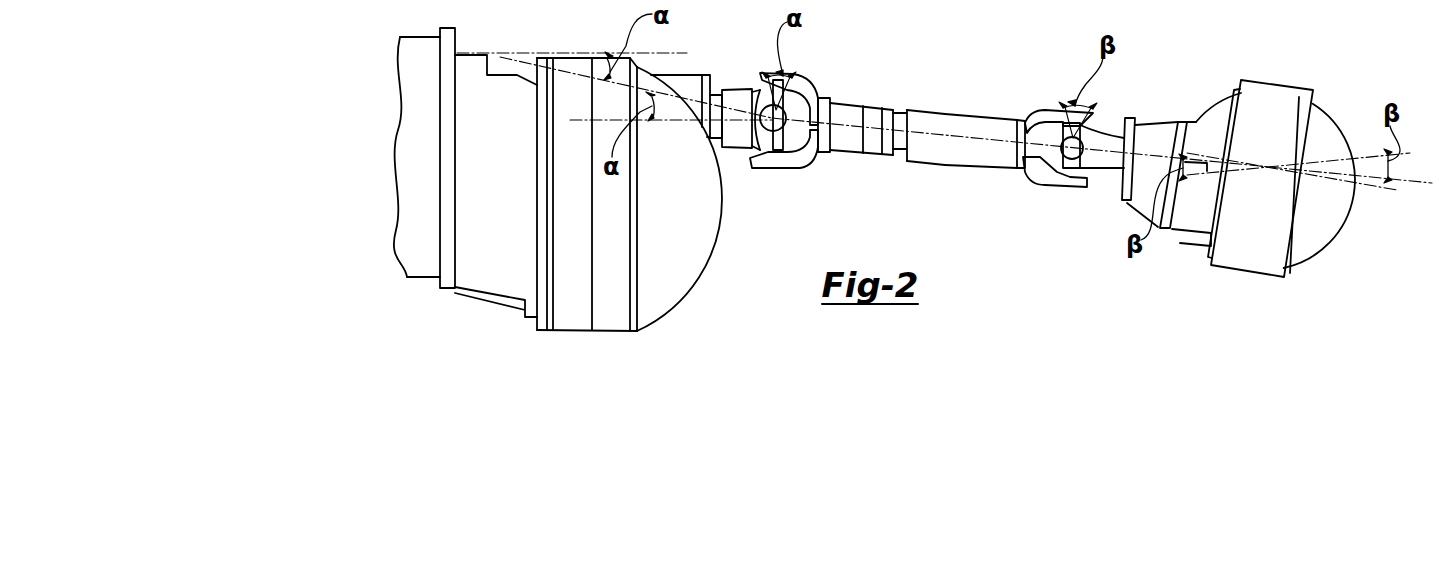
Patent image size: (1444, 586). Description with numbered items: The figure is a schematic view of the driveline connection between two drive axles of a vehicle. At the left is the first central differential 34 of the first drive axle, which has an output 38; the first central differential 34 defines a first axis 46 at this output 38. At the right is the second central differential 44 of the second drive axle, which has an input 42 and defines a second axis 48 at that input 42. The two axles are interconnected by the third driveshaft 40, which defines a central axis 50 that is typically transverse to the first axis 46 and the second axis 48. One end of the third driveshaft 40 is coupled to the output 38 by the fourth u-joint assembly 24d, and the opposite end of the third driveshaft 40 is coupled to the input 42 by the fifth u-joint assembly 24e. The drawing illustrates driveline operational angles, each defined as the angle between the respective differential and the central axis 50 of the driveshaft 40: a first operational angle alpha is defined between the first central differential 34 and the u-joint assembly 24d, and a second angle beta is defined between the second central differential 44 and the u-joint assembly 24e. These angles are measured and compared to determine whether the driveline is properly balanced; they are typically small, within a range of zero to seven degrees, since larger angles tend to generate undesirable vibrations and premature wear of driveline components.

The first central differential 34 is at (683, 257).
The output 38 is at (730, 97).
The first axis 46 is at (678, 122).
The fourth u-joint assembly 24d is at (776, 160).
The central axis 50 is at (930, 143).
The third driveshaft 40 is at (977, 155).
The fifth u-joint assembly 24e is at (1043, 110).
The input 42 is at (1100, 163).
The second axis 48 is at (1203, 122).
The second central differential 44 is at (1320, 222).